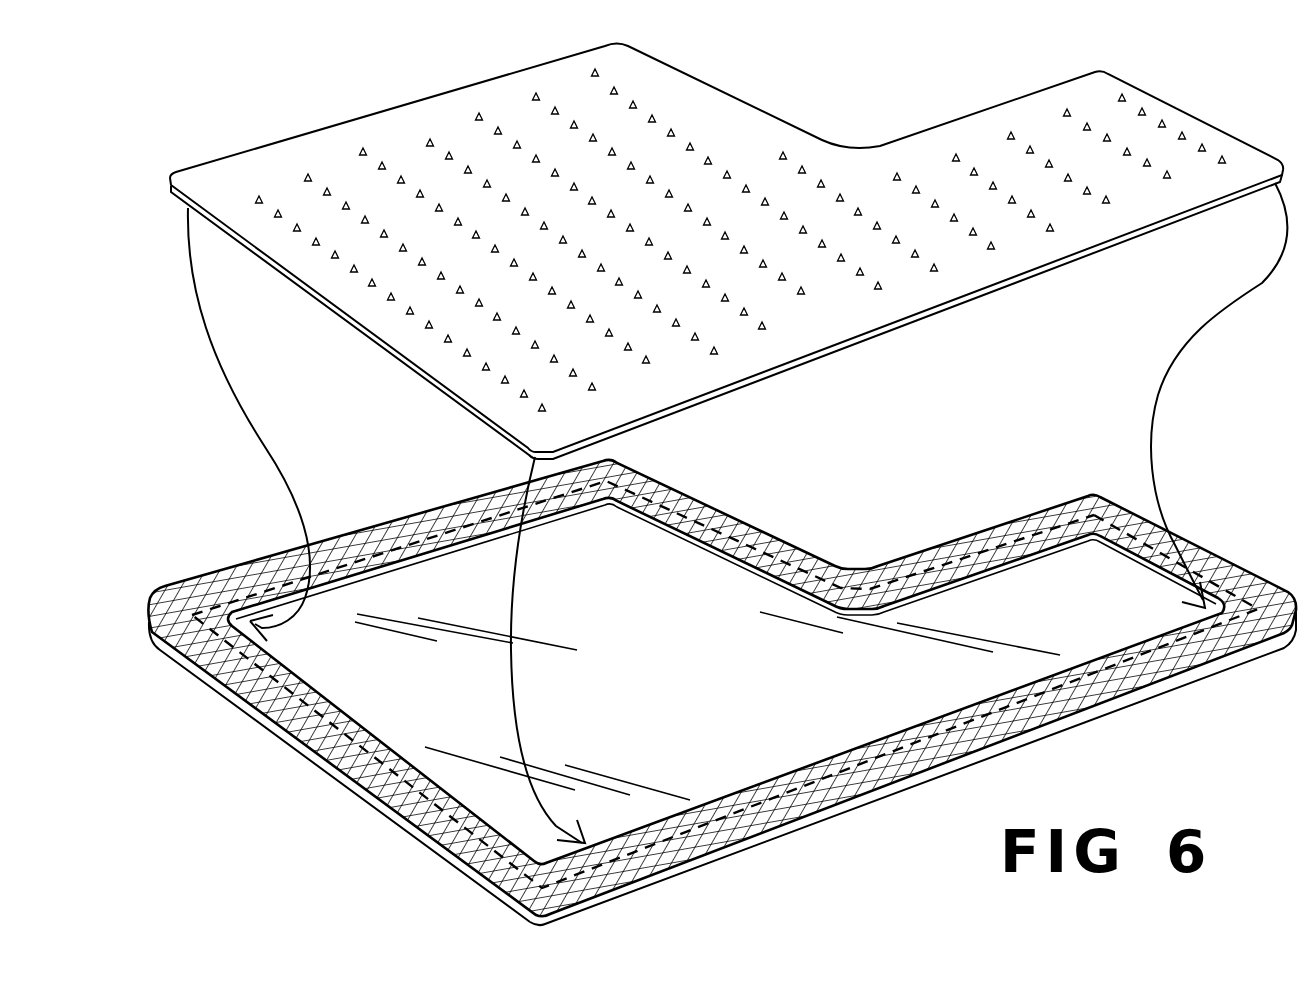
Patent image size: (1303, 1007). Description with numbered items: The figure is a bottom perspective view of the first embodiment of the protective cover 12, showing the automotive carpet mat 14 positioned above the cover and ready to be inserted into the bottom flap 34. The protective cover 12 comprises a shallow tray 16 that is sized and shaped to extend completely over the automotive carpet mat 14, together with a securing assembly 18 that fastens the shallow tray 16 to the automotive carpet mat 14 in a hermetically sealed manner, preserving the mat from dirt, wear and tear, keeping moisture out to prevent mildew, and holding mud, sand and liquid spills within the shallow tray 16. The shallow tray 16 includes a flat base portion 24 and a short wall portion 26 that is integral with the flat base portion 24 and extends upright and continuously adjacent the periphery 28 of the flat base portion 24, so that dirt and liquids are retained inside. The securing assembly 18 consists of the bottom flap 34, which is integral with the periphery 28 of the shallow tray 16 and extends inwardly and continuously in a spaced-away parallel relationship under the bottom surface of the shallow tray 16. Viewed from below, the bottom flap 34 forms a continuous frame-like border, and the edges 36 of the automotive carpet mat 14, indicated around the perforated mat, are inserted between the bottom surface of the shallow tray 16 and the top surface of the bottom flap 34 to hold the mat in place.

The protective cover 12 is at (208, 473).
The automotive carpet mat 14 is at (726, 245).
The shallow tray 16 is at (717, 692).
The securing assembly 18 is at (344, 712).
The flat base portion 24 is at (703, 582).
The short wall portion 26 is at (852, 810).
The periphery 28 is at (230, 698).
The bottom flap 34 is at (1010, 548).
The edges 36 is at (395, 108).